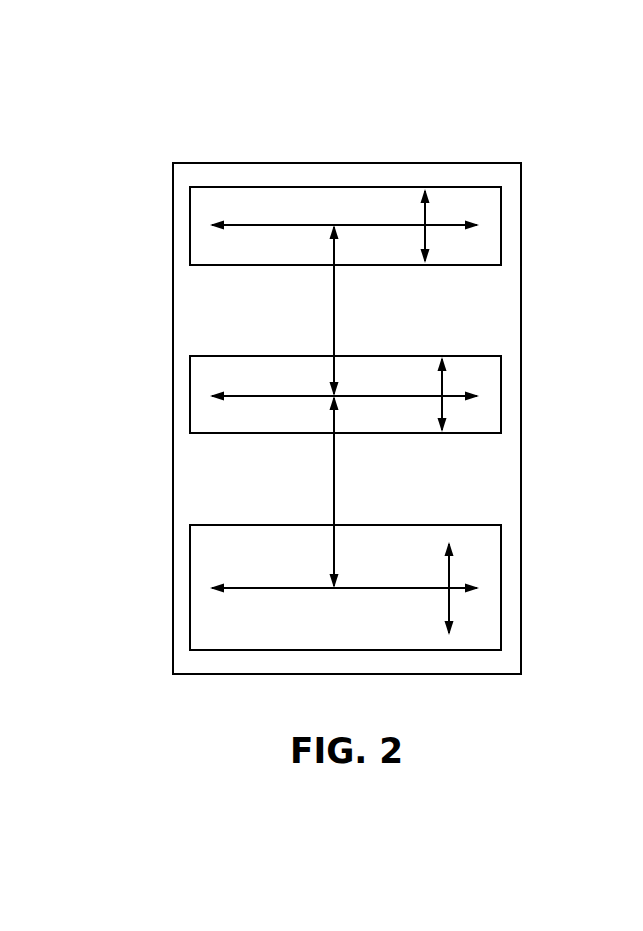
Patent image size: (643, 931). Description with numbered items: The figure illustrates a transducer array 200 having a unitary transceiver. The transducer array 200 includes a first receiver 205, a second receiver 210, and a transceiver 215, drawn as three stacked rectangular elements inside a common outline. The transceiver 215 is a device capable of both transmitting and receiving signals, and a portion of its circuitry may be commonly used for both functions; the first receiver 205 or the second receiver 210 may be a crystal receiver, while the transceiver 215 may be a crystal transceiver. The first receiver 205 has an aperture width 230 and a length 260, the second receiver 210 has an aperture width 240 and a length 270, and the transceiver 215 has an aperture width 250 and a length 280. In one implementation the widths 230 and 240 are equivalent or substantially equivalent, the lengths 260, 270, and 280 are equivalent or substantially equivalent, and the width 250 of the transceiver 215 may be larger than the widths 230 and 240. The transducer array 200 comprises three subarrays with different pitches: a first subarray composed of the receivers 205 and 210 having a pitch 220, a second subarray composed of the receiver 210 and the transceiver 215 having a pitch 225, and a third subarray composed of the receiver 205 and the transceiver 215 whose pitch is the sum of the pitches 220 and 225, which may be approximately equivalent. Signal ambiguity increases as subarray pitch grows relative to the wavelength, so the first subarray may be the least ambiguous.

The transducer array 200 is at (455, 94).
The first receiver 205 is at (190, 243).
The second receiver 210 is at (190, 413).
The transceiver 215 is at (190, 628).
The pitch 220 is at (334, 308).
The pitch 225 is at (334, 478).
The aperture width 230 is at (427, 213).
The aperture width 240 is at (442, 383).
The aperture width 250 is at (449, 568).
The length 260 is at (270, 225).
The length 270 is at (260, 395).
The length 280 is at (260, 588).